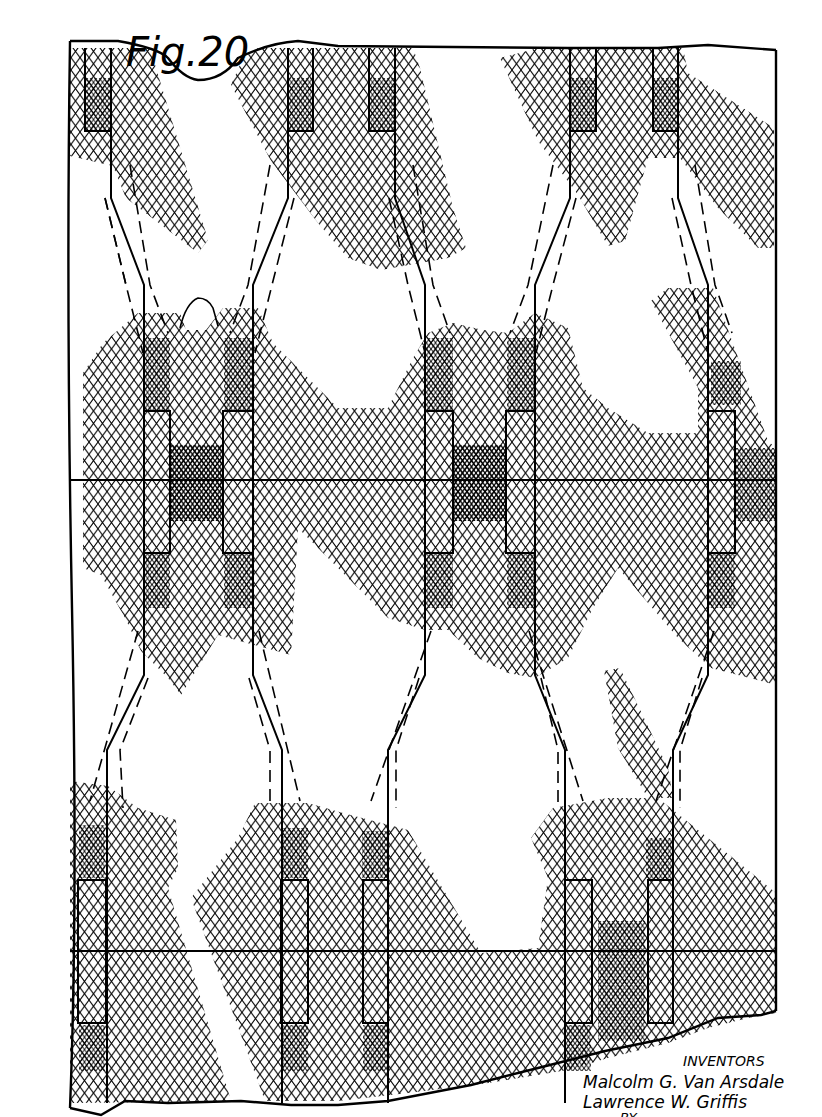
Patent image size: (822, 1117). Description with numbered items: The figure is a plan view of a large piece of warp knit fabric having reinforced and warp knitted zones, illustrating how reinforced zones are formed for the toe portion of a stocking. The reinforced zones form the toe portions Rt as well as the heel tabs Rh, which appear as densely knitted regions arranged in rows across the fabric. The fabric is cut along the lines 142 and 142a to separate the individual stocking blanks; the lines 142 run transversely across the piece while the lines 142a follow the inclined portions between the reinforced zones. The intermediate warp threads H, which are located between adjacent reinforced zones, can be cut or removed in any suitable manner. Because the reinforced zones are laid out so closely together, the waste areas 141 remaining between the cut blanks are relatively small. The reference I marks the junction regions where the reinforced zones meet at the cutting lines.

The heel tab Rh is at (283, 93).
The toe portion Rt is at (195, 460).
The interlocking flange junction I is at (200, 402).
The intermediate warp threads H is at (105, 228).
The waste areas 141 is at (520, 430).
The cutting line 142 is at (70, 472).
The cutting line 142a is at (252, 248).